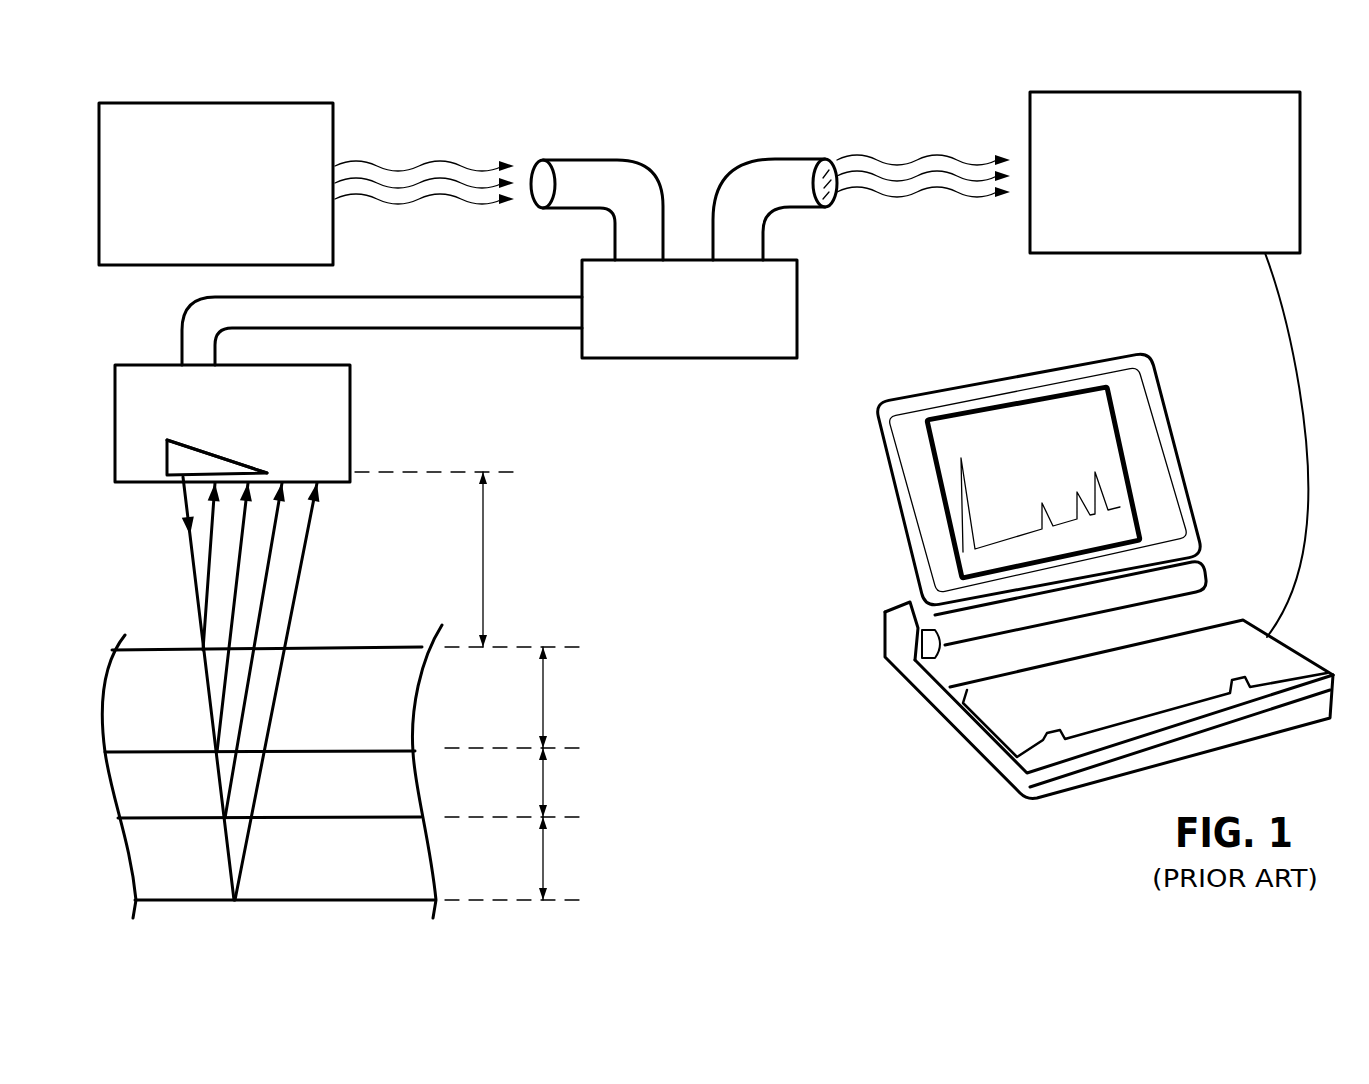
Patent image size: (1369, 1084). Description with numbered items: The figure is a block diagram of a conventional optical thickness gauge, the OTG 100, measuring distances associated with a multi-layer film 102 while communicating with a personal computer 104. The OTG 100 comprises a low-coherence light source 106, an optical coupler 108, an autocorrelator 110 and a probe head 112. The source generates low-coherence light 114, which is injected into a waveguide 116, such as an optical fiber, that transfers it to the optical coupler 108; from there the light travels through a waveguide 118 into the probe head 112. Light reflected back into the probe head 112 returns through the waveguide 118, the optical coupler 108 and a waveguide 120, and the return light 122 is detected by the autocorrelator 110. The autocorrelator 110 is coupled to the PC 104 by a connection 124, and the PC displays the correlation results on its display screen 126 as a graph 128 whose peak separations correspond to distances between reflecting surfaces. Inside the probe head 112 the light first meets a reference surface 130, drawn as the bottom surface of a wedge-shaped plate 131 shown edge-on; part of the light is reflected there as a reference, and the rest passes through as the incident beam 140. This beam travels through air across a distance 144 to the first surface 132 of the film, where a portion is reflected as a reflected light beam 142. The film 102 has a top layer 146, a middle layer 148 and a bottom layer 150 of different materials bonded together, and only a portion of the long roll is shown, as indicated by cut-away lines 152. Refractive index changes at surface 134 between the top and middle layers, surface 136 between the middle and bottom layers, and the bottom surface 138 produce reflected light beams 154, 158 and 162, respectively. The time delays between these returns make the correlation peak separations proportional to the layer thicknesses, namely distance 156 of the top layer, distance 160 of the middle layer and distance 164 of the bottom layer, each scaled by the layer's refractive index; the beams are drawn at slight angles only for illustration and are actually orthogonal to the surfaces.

The OTG 100 is at (897, 271).
The multi-layer film 102 is at (397, 761).
The personal computer 104 is at (1105, 616).
The low-coherence light source 106 is at (283, 249).
The optical coupler 108 is at (748, 347).
The autocorrelator 110 is at (1250, 237).
The probe head 112 is at (300, 469).
The low-coherence light 114 is at (408, 145).
The waveguide 116 is at (580, 158).
The waveguide 118 is at (452, 292).
The waveguide 120 is at (763, 158).
The return light 122 is at (880, 147).
The connection 124 is at (1302, 557).
The display screen 126 is at (1120, 448).
The graph 128 is at (973, 507).
The reference surface 130 is at (193, 475).
The wedge-shaped plate 131 is at (233, 462).
The first surface 132 is at (170, 645).
The surface 134 is at (122, 748).
The surface 136 is at (137, 817).
The bottom surface 138 is at (148, 898).
The incident beam 140 is at (193, 577).
The reflected light beam 142 is at (213, 540).
The distance 144 is at (468, 559).
The top layer 146 is at (358, 733).
The middle layer 148 is at (366, 801).
The bottom layer 150 is at (385, 883).
The cut-away lines 152 is at (115, 827).
The reflected light beam 154 is at (242, 572).
The distance 156 is at (518, 697).
The reflected light beam 158 is at (263, 598).
The distance 160 is at (518, 782).
The reflected light beam 162 is at (290, 623).
The distance 164 is at (520, 858).